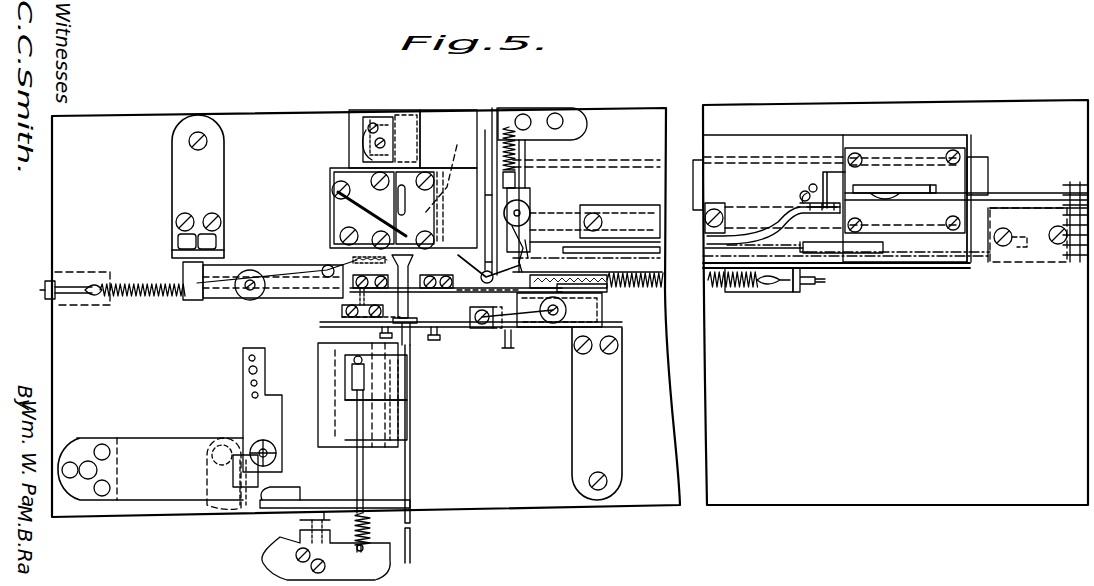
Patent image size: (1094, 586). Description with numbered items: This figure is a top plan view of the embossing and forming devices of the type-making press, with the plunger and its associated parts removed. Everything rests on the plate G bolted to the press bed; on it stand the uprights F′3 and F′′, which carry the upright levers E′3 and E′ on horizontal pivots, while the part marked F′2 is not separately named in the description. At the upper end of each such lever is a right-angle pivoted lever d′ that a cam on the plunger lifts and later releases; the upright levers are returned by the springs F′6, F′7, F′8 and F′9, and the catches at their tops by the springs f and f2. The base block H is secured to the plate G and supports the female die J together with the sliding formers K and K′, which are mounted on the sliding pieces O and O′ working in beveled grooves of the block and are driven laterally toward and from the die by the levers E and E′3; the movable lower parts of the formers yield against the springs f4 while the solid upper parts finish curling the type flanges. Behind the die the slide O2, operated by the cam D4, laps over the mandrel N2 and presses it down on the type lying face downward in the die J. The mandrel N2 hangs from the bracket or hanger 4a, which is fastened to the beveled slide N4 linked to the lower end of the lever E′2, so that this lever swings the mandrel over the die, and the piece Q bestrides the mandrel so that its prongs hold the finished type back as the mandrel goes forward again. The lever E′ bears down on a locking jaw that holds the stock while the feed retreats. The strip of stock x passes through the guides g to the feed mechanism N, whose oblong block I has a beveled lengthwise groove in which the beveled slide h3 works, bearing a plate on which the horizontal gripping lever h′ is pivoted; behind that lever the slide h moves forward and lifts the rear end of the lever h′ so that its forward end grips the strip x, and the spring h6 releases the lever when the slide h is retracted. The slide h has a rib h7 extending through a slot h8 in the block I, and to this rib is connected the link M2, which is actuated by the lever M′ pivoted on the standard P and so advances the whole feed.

The plate G is at (518, 500).
The standard P is at (1093, 280).
The standard F′3 is at (177, 255).
The lever E′3 is at (247, 263).
The spring F′6 is at (151, 294).
The base block H is at (328, 167).
The female die J is at (340, 223).
The springs f4 is at (325, 257).
The slide O2 is at (448, 161).
The cam D4 is at (450, 47).
The standard F′′ is at (543, 110).
The spring F′9 is at (577, 117).
The lever E′ is at (540, 198).
The lever d′ is at (520, 202).
The guides g is at (517, 265).
The spring f2 is at (530, 245).
The spring F′7 is at (647, 290).
The former K′ is at (313, 310).
The sliding piece O′ is at (312, 325).
The piece bestriding mandrel Q is at (350, 332).
The former K is at (432, 270).
The sliding piece O is at (470, 273).
The lever E is at (527, 312).
The spring f is at (528, 340).
The arm F′2 is at (137, 443).
The lever E′2 is at (240, 420).
The feed mechanism N is at (330, 447).
The beveled slide N4 is at (355, 445).
The mandrel N2 is at (413, 455).
The bracket or hanger 4a is at (403, 382).
The spring F′8 is at (370, 528).
The slide h is at (835, 176).
The rib h7 is at (893, 187).
The slot h8 is at (937, 187).
The beveled slide h3 is at (983, 177).
The spring h6 is at (800, 193).
The oblong block I is at (923, 260).
The strip of stock x is at (845, 262).
The lever h′ is at (732, 270).
The link M2 is at (1027, 195).
The lever M′ is at (1073, 250).